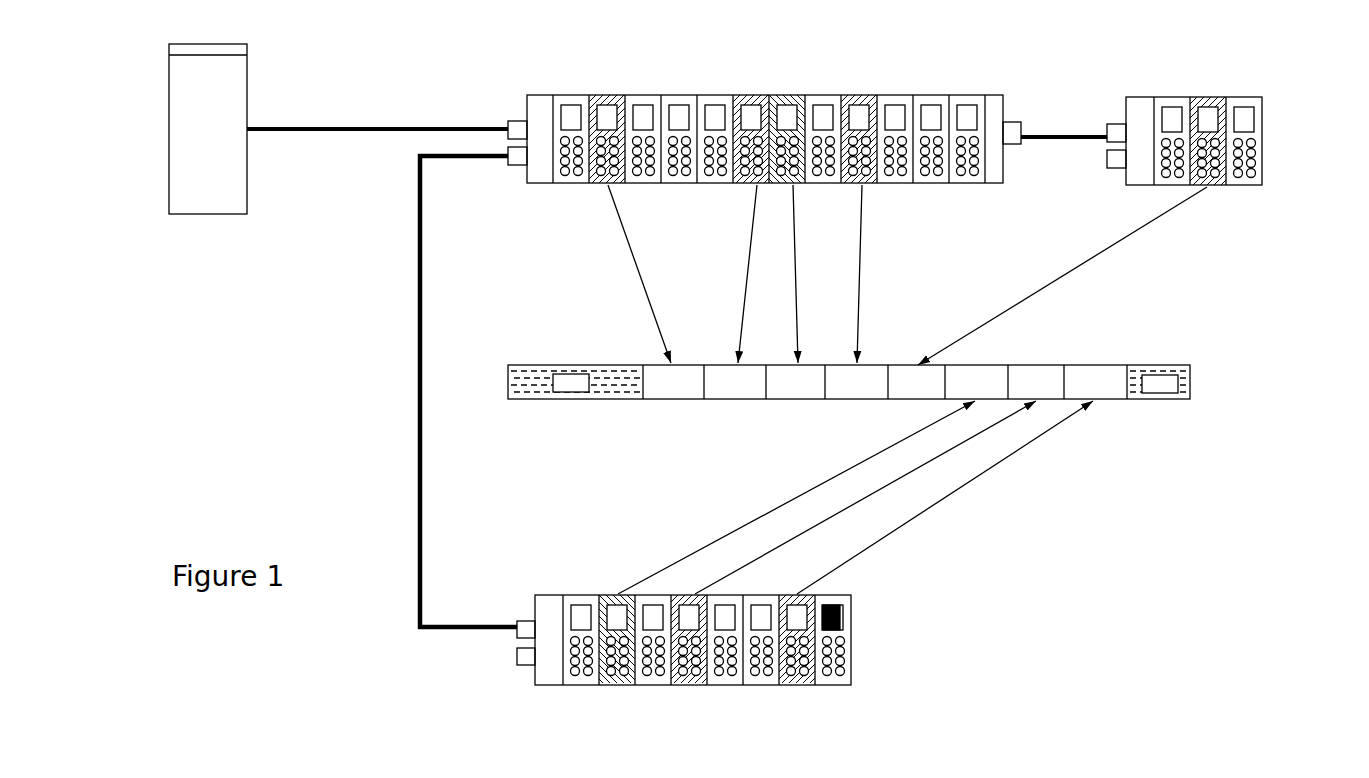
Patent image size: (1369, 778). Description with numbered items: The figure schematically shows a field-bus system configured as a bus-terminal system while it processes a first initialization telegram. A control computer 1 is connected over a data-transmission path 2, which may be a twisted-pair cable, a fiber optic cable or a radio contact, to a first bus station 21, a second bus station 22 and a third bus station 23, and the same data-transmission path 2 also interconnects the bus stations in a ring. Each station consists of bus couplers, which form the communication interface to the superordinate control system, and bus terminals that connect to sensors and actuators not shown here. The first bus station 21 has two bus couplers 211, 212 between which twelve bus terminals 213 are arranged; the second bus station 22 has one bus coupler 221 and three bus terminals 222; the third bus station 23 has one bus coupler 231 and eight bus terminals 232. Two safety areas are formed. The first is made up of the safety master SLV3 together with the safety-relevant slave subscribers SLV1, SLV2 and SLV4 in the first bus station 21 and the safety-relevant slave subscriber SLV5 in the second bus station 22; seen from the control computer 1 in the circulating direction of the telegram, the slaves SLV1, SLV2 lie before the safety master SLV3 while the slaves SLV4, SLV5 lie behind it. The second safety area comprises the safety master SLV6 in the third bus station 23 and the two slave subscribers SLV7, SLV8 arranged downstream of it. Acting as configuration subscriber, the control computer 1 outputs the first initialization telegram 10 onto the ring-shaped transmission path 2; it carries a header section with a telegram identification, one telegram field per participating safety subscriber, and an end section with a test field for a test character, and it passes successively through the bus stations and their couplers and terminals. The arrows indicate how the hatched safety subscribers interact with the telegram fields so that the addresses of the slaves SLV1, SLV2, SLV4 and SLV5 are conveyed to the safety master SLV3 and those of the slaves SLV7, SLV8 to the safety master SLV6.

The control computer 1 is at (204, 138).
The data-transmission path 2 is at (345, 125).
The first initialization telegram 10 is at (1190, 380).
The first bus station 21 is at (741, 181).
The bus coupler 211 is at (540, 108).
The bus coupler 212 is at (990, 98).
The bus terminals 213 is at (740, 195).
The second bus station 22 is at (1129, 184).
The bus coupler 221 is at (1140, 108).
The bus terminals 222 is at (1114, 199).
The third bus station 23 is at (787, 577).
The bus coupler 231 is at (540, 593).
The bus terminals 232 is at (824, 577).
The safety-relevant slave subscriber SLV1 is at (595, 185).
The safety-relevant slave subscriber SLV2 is at (745, 185).
The safety master SLV3 is at (800, 185).
The safety-relevant slave subscriber SLV4 is at (860, 185).
The safety-relevant slave subscriber SLV5 is at (1210, 187).
The safety master SLV6 is at (605, 595).
The safety-relevant slave subscriber SLV7 is at (683, 595).
The safety-relevant slave subscriber SLV8 is at (818, 597).